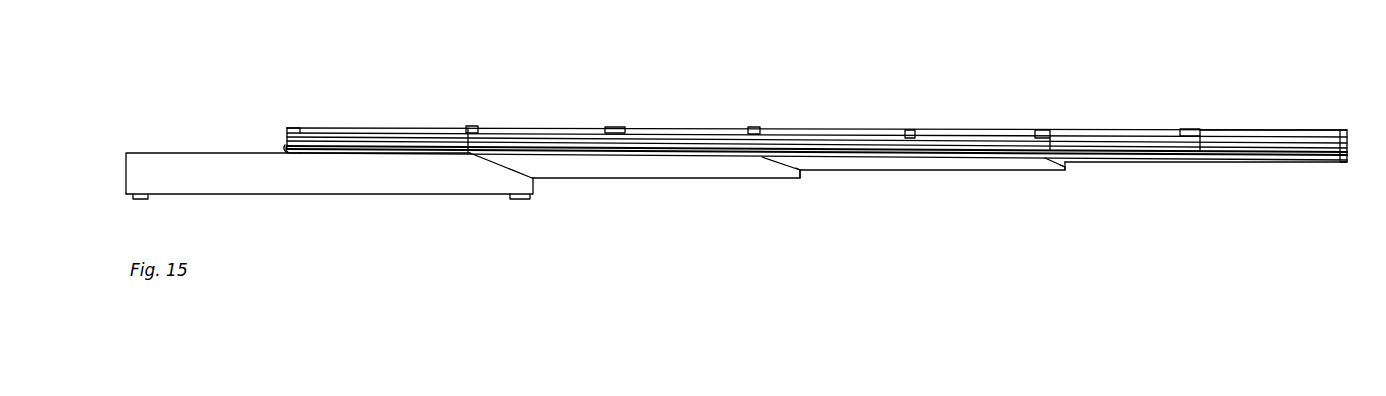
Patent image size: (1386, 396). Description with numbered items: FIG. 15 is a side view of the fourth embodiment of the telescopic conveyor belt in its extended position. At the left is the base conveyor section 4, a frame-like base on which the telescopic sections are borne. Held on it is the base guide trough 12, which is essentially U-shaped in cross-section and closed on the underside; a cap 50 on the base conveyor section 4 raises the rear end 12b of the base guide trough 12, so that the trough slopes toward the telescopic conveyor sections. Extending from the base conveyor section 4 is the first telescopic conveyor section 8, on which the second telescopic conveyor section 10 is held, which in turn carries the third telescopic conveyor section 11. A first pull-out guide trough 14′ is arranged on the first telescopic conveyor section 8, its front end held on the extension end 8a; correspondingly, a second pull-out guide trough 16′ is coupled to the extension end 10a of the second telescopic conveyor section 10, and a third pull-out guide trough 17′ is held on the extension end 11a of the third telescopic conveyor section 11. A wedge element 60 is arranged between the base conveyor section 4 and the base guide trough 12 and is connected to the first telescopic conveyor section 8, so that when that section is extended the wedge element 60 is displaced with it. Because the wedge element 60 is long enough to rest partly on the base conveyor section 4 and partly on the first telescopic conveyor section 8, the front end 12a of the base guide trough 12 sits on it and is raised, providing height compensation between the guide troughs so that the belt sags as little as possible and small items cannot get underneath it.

The base conveyor section 4 is at (381, 180).
The first telescopic conveyor section 8 is at (670, 175).
The extension end of the first telescopic conveyor section 8a is at (771, 186).
The second telescopic conveyor section 10 is at (933, 168).
The extension end of the second telescopic conveyor section 10a is at (1053, 176).
The third telescopic conveyor section 11 is at (1220, 167).
The extension end of the third telescopic conveyor section 11a is at (1336, 172).
The base guide trough 12 is at (400, 142).
The end of the base guide trough facing the telescopic conveyor sections 12a is at (473, 118).
The end of the base guide trough facing away from the telescopic conveyor sections 12b is at (283, 124).
The first pull-out guide trough 14′ is at (690, 134).
The second pull-out guide trough 16′ is at (978, 135).
The third pull-out guide trough 17′ is at (1270, 134).
The cap 50 is at (305, 158).
The wedge element 60 is at (470, 155).